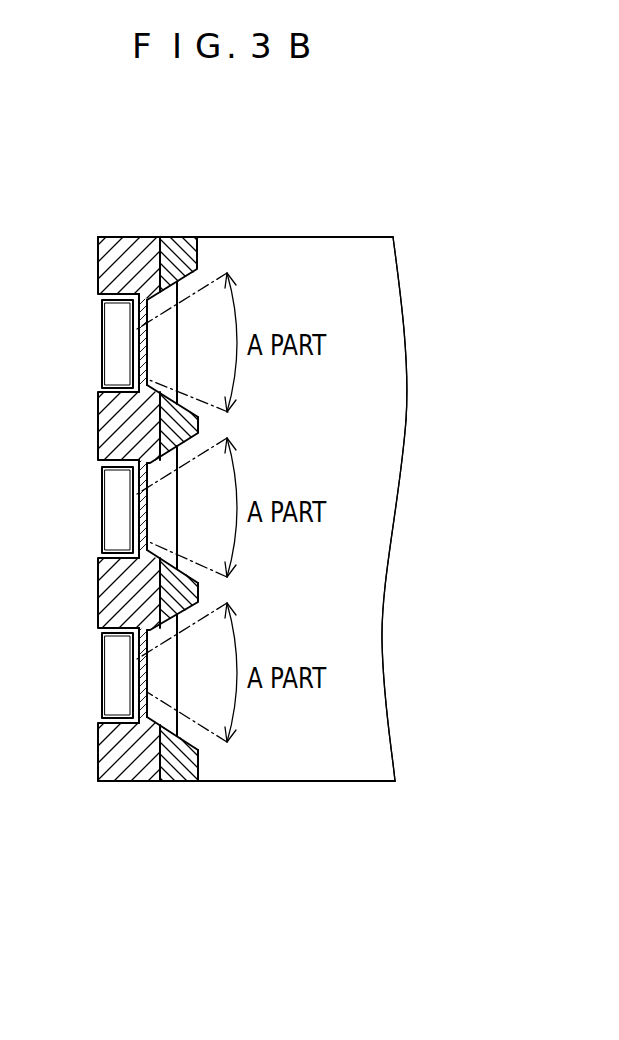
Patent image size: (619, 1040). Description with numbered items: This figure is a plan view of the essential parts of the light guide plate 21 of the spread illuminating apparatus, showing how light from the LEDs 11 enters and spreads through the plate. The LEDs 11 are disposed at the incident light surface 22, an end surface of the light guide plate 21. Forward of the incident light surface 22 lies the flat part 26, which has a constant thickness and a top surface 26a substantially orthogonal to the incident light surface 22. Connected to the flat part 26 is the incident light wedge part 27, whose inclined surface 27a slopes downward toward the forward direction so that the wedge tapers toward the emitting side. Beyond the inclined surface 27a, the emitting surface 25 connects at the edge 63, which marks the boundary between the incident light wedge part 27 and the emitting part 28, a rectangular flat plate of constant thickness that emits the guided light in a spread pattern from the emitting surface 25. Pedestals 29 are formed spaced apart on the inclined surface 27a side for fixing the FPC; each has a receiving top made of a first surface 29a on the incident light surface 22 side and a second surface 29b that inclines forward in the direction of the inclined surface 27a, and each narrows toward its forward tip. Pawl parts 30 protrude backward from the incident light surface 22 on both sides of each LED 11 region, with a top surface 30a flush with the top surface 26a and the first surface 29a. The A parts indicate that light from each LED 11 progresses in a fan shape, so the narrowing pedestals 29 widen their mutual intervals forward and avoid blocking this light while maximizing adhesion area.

The LED 11 is at (115, 693).
The light guide plate 21 is at (384, 222).
The incident light surface 22 is at (130, 633).
The emitting surface 25 is at (387, 430).
The flat part 26 is at (105, 571).
The top surface 26a is at (150, 540).
The incident light wedge part 27 is at (105, 404).
The inclined surface 27a is at (148, 384).
The emitting part 28 is at (375, 527).
The pedestal 29 is at (180, 234).
The first surface 29a is at (153, 252).
The second surface 29b is at (177, 250).
The pawl part 30 is at (105, 751).
The top surface 30a is at (140, 742).
The edge 63 is at (180, 685).